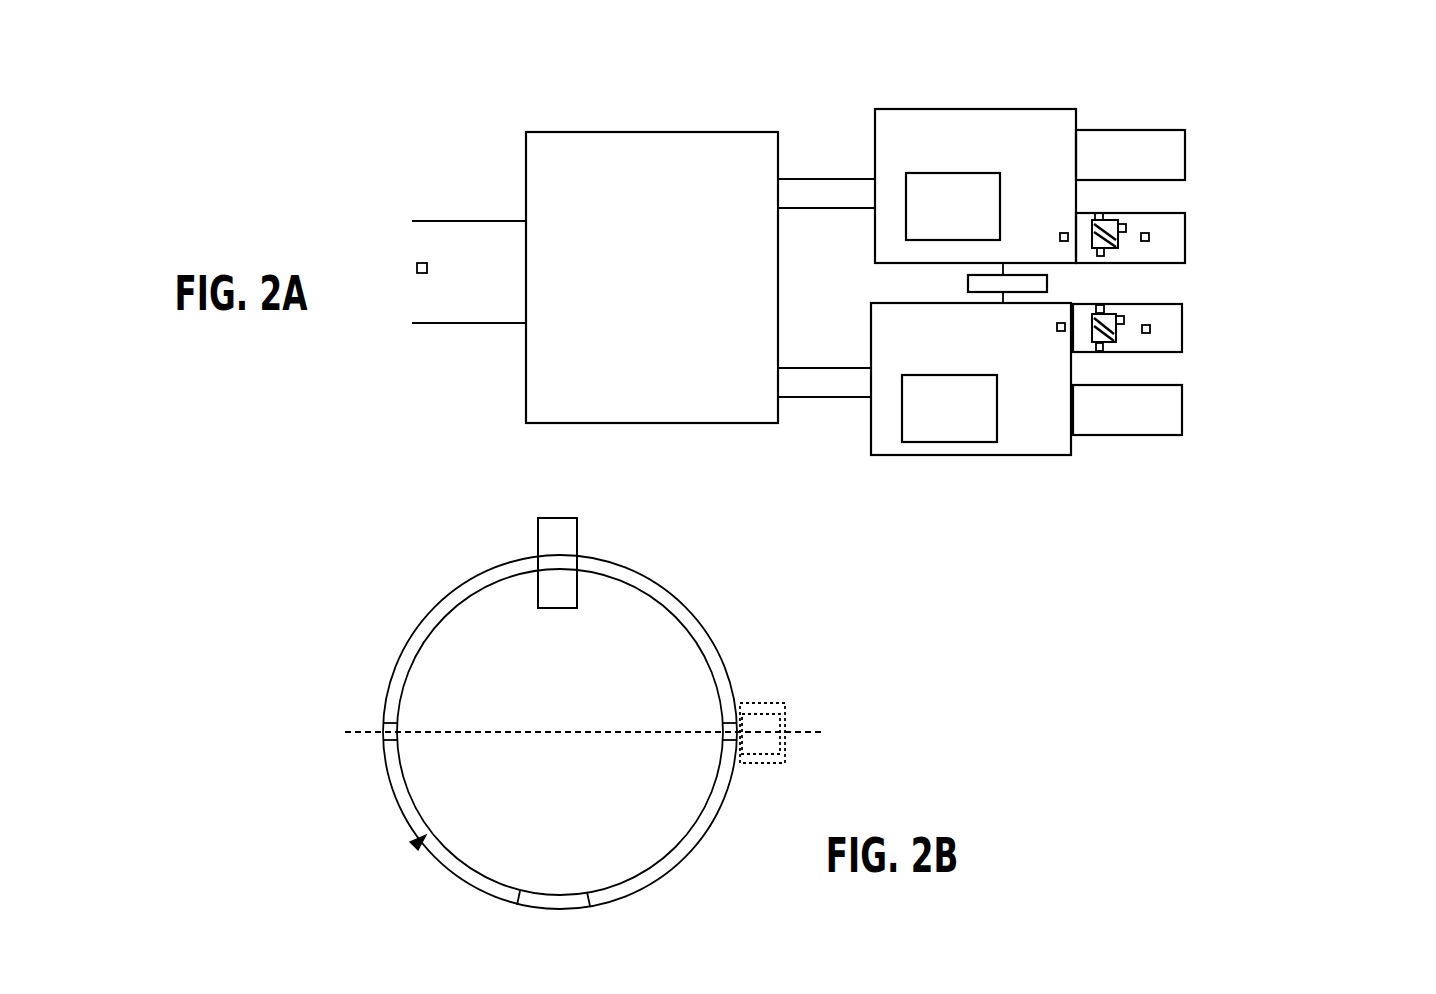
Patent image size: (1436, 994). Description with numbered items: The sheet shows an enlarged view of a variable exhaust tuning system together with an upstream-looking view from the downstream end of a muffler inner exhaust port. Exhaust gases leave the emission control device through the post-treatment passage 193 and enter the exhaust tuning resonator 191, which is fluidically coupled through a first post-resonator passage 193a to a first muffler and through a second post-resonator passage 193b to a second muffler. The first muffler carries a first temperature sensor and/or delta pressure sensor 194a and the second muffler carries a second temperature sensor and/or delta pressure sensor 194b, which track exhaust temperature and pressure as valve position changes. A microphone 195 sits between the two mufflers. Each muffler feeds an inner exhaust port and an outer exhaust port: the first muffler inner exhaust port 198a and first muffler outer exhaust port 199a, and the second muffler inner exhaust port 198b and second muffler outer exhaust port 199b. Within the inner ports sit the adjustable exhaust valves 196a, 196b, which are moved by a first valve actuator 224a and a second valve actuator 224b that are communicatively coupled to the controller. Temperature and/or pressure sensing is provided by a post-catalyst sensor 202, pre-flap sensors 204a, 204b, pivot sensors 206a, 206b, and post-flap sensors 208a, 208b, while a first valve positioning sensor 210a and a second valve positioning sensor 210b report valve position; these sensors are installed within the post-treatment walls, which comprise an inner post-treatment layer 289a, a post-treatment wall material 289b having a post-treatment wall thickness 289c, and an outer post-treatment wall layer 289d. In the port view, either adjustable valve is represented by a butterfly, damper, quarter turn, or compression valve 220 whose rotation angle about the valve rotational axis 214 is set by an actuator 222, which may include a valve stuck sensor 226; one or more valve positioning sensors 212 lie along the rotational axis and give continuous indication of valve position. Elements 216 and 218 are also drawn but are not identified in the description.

In FIG. 2A, the exhaust tuning resonator 191 is at (652, 277).
In FIG. 2A, the post-treatment passage 193 is at (469, 272).
In FIG. 2A, the first post-resonator passage 193a is at (826, 195).
In FIG. 2A, the second post-resonator passage 193b is at (824, 384).
In FIG. 2A, the first temperature sensor and/or delta pressure sensor 194a is at (927, 173).
In FIG. 2A, the second temperature sensor and/or delta pressure sensor 194b is at (925, 442).
In FIG. 2A, the microphone 195 is at (968, 284).
In FIG. 2A, the first adjustable exhaust valve 196a is at (1105, 213).
In FIG. 2A, the second adjustable exhaust valve 196b is at (1099, 308).
In FIG. 2A, the first muffler inner exhaust port 198a is at (1185, 246).
In FIG. 2A, the second muffler inner exhaust port 198b is at (1182, 316).
In FIG. 2A, the first muffler outer exhaust port 199a is at (1185, 130).
In FIG. 2A, the second muffler outer exhaust port 199b is at (1182, 432).
In FIG. 2A, the post-catalyst sensor 202 is at (413, 268).
In FIG. 2A, the first pre-flap sensor 204a is at (1058, 240).
In FIG. 2A, the second pre-flap sensor 204b is at (1061, 333).
In FIG. 2A, the first pivot sensor 206a is at (1101, 256).
In FIG. 2A, the second pivot sensor 206b is at (1100, 351).
In FIG. 2A, the first post-flap sensor 208a is at (1150, 240).
In FIG. 2A, the second post-flap sensor 208b is at (1150, 333).
In FIG. 2A, the first valve positioning sensor 210a is at (1118, 221).
In FIG. 2A, the second valve positioning sensor 210b is at (1117, 321).
In FIG. 2A, the first valve actuator 224a is at (1098, 213).
In FIG. 2A, the second valve actuator 224b is at (1099, 304).
In FIG. 2B, the valve positioning sensor 212 is at (385, 700).
In FIG. 2B, the valve rotational axis 214 is at (348, 740).
In FIG. 2B, the ring segment under connector 216 is at (538, 592).
In FIG. 2B, the connector block 218 is at (537, 538).
In FIG. 2B, the valve 220 is at (560, 732).
In FIG. 2B, the actuator 222 is at (793, 728).
In FIG. 2B, the valve stuck sensor 226 is at (787, 763).
In FIG. 2B, the inner post-treatment layer 289a is at (515, 903).
In FIG. 2B, the post-treatment wall material 289b is at (416, 845).
In FIG. 2B, the post-treatment wall thickness 289c is at (553, 899).
In FIG. 2B, the outer post-treatment wall layer 289d is at (443, 872).